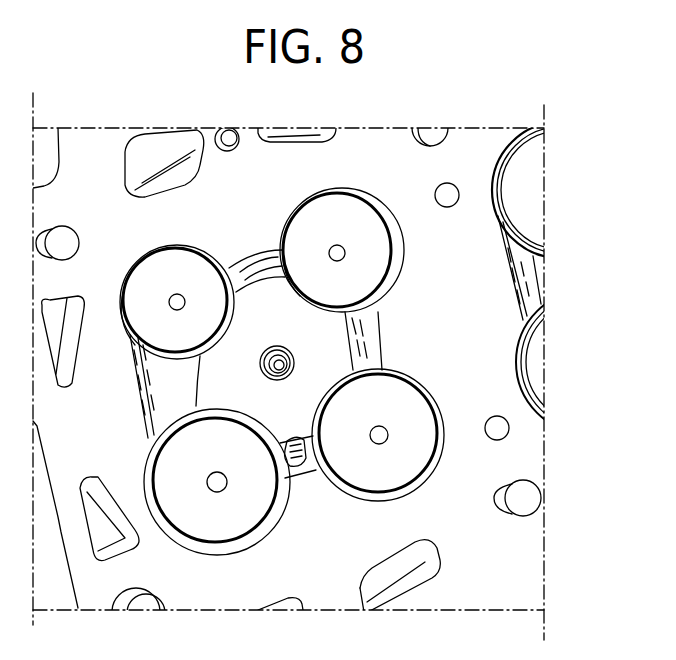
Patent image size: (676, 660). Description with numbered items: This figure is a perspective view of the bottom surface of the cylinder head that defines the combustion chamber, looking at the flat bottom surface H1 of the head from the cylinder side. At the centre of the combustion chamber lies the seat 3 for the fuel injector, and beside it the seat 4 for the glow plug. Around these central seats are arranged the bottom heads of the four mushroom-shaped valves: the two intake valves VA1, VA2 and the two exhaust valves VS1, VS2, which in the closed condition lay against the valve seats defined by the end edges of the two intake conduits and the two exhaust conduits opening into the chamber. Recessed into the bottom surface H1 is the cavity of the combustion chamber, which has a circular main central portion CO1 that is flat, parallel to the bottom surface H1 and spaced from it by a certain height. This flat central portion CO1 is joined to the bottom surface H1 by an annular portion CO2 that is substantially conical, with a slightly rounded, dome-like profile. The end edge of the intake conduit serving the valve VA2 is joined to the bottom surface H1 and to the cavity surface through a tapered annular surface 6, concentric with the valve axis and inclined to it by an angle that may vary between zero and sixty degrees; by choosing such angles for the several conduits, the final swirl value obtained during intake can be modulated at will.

The exhaust valve VS1 is at (166, 268).
The exhaust valve VS2 is at (327, 215).
The intake valve VA1 is at (217, 520).
The intake valve VA2 is at (406, 470).
The flat circular central portion of the cavity CO1 is at (316, 343).
The annular portion of the cavity CO2 is at (370, 363).
The bottom surface of the cylinder head H1 is at (475, 254).
The tapered annular surface 6 is at (390, 292).
The fuel injector seat 3 is at (270, 348).
The glow plug seat 4 is at (317, 468).